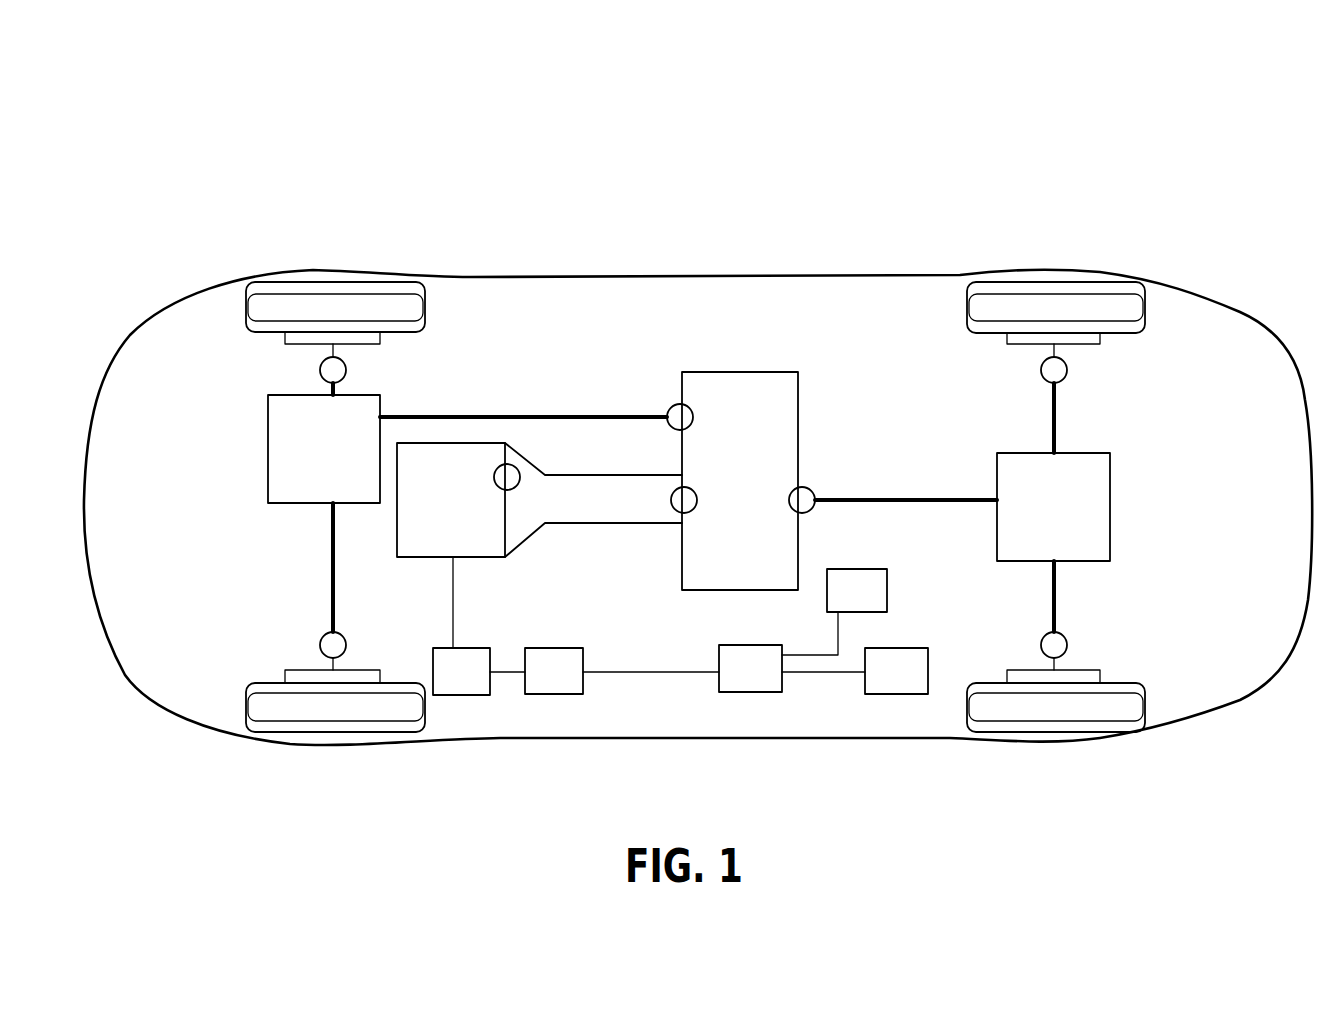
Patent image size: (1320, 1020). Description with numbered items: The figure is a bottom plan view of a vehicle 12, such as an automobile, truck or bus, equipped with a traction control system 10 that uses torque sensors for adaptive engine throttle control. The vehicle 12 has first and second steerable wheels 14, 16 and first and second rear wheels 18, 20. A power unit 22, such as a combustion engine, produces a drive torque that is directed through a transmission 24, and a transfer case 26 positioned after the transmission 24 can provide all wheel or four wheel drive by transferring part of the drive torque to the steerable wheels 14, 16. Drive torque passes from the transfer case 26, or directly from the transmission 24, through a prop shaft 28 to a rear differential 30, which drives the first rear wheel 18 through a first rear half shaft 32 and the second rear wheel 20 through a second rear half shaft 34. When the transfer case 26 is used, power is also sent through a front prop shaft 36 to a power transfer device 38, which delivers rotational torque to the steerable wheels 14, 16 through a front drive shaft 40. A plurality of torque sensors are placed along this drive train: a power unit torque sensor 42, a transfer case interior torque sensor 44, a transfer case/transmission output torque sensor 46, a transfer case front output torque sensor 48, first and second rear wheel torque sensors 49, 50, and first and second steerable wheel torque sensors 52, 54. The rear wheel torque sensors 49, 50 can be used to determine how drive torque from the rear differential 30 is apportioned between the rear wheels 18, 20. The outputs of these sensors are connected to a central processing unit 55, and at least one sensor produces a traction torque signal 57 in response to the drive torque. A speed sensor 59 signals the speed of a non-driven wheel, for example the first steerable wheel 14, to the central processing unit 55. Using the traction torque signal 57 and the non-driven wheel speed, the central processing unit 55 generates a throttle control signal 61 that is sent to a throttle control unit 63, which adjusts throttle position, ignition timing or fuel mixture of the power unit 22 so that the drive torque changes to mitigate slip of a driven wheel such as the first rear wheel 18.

The traction control system 10 is at (878, 106).
The vehicle 12 is at (822, 275).
The first steerable wheel 14 is at (365, 290).
The second steerable wheel 16 is at (382, 723).
The first rear wheel 18 is at (1015, 290).
The second rear wheel 20 is at (1105, 712).
The power unit 22 is at (486, 541).
The transmission 24 is at (557, 513).
The transfer case 26 is at (743, 572).
The prop shaft 28 is at (910, 497).
The rear differential 30 is at (1095, 508).
The first rear half shaft 32 is at (1057, 425).
The second rear half shaft 34 is at (1057, 587).
The front prop shaft 36 is at (455, 413).
The power transfer device 38 is at (293, 470).
The front drive shaft 40 is at (330, 577).
The power unit torque sensor 42 is at (512, 474).
The transfer case interior torque sensor 44 is at (688, 503).
The transfer case/transmission output torque sensor 46 is at (808, 490).
The transfer case front output torque sensor 48 is at (675, 408).
The first rear wheel torque sensor 49 is at (1048, 370).
The second rear wheel torque sensor 50 is at (1047, 642).
The first steerable wheel torque sensor 52 is at (328, 368).
The second steerable wheel torque sensor 54 is at (338, 645).
The central processing unit 55 is at (770, 683).
The traction torque signal 57 is at (877, 590).
The speed sensor 59 is at (908, 683).
The throttle control signal 61 is at (555, 680).
The throttle control unit 63 is at (465, 685).